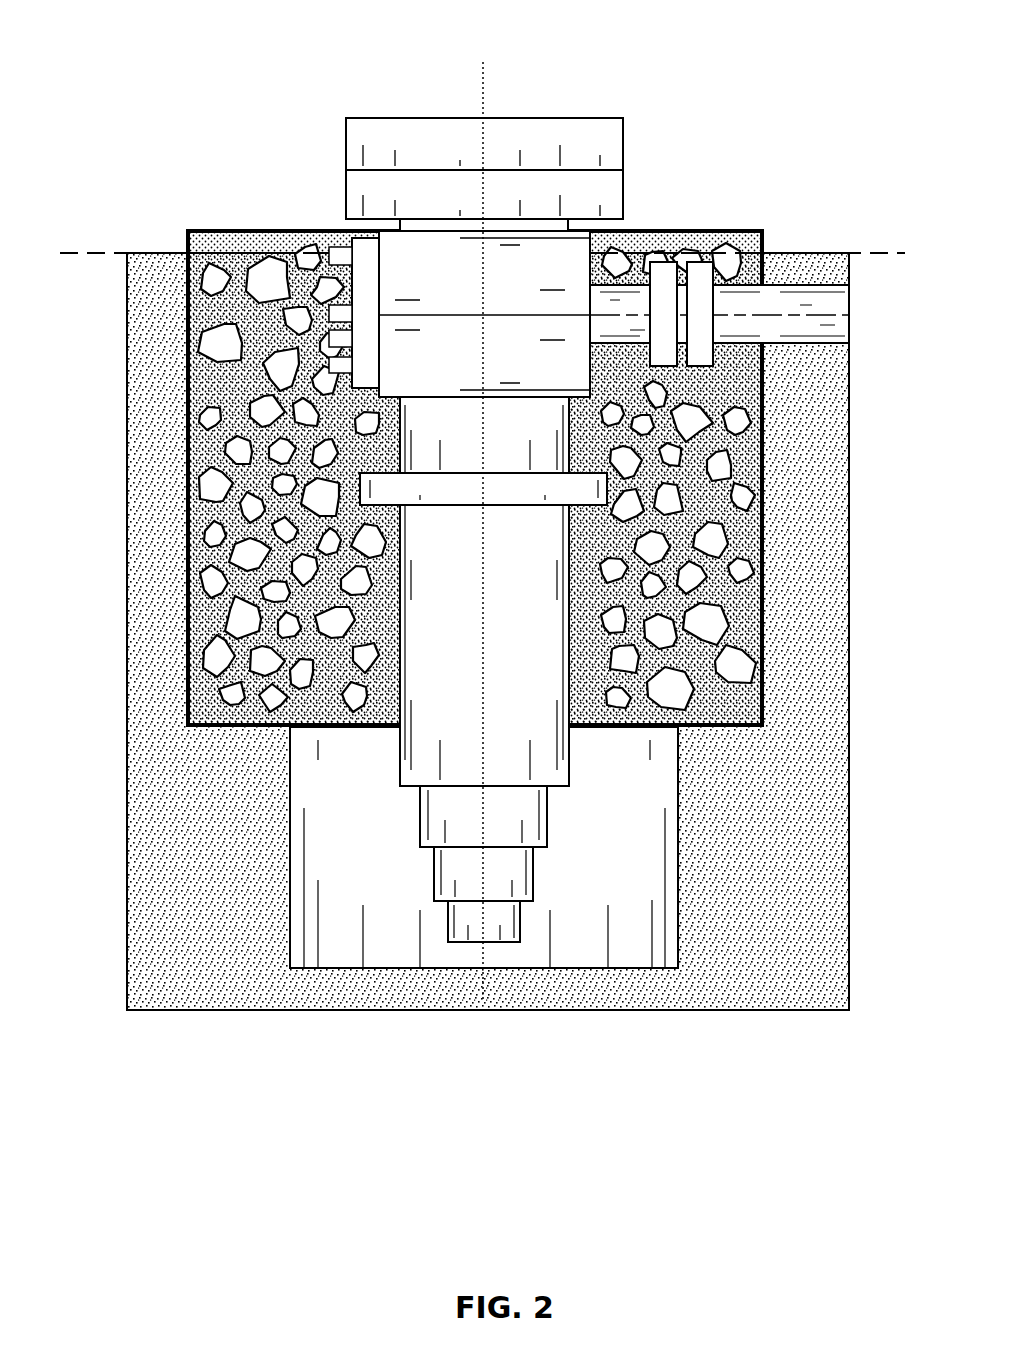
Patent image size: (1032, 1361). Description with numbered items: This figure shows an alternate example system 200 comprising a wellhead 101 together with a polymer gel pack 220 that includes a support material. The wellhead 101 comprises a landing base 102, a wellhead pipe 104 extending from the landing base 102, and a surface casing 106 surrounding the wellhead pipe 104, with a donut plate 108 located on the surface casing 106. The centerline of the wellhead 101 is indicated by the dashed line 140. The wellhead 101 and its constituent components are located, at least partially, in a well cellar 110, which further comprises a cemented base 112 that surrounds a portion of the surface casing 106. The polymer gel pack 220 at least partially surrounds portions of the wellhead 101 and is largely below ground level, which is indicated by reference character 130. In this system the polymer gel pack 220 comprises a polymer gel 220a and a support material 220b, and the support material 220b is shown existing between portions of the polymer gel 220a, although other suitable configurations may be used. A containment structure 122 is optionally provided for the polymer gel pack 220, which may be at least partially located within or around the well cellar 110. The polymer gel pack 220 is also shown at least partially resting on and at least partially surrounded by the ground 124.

The system 200 is at (747, 35).
The dashed line 140 is at (490, 70).
The wellhead 101 is at (482, 586).
The ground level 130 is at (876, 252).
The landing base 102 is at (393, 282).
The containment structure 122 is at (760, 497).
The well cellar 110 is at (858, 597).
The polymer gel pack 220 is at (387, 492).
The polymer gel 220a is at (228, 668).
The support material 220b is at (265, 450).
The donut plate 108 is at (413, 490).
The surface casing 106 is at (413, 635).
The wellhead pipe 104 is at (475, 933).
The cemented base 112 is at (577, 930).
The ground 124 is at (210, 855).